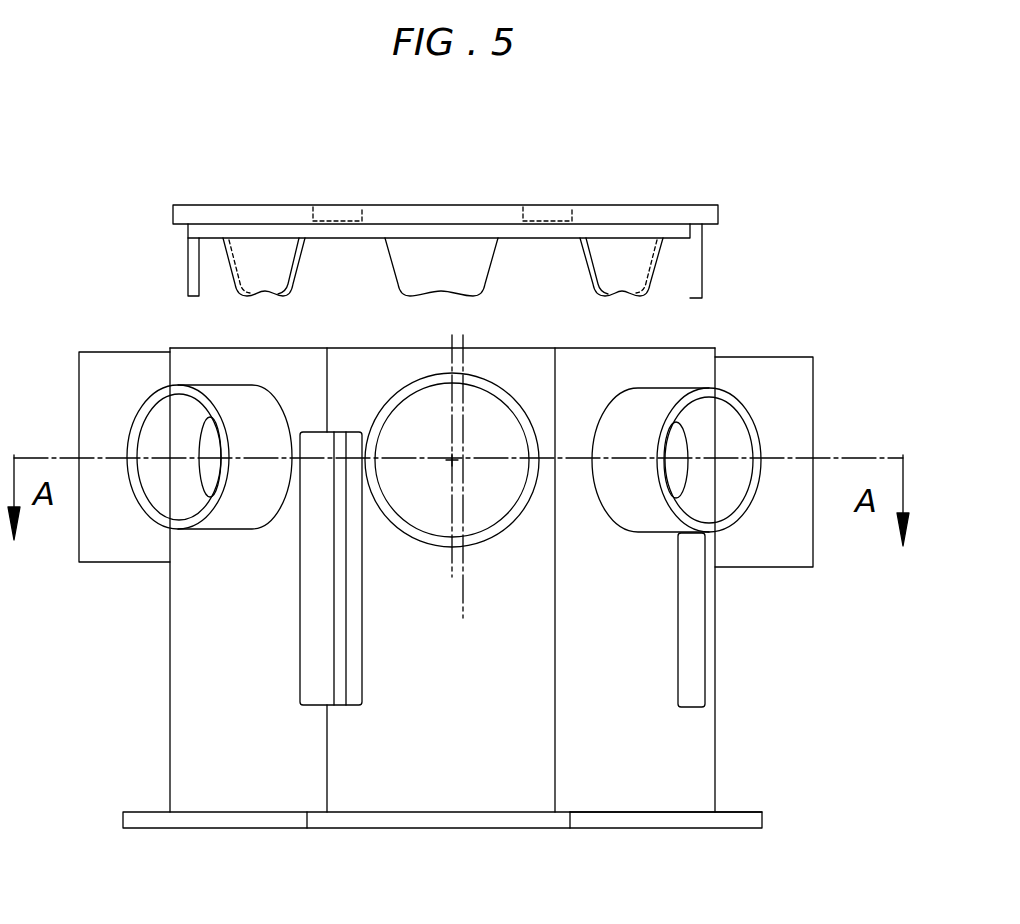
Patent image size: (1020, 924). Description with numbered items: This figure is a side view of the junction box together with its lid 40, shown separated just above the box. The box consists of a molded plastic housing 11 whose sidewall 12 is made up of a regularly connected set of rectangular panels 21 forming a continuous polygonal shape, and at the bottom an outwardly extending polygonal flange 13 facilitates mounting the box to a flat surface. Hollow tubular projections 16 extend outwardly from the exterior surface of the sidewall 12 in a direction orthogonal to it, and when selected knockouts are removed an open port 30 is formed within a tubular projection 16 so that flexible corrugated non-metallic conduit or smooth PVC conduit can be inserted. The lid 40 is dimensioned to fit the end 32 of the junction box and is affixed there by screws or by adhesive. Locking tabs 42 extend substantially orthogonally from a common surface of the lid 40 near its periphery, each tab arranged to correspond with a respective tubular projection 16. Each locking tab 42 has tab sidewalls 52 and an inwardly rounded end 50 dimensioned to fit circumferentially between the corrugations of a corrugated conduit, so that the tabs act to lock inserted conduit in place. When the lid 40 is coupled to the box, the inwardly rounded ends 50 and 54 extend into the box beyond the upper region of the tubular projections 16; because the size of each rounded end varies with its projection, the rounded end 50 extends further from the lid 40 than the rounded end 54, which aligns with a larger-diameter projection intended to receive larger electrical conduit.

The molded plastic housing 11 is at (605, 822).
The sidewall 12 is at (680, 788).
The polygonal flange 13 is at (343, 827).
The hollow tubular projection 16 is at (727, 522).
The rectangular panel 21 is at (228, 695).
The open port 30 is at (488, 492).
The end of junction box 32 is at (227, 347).
The lid 40 is at (663, 205).
The locking tab 42 is at (615, 257).
The inwardly rounded end 50 is at (260, 295).
The tab sidewall 52 is at (583, 270).
The rounded end 54 is at (438, 253).